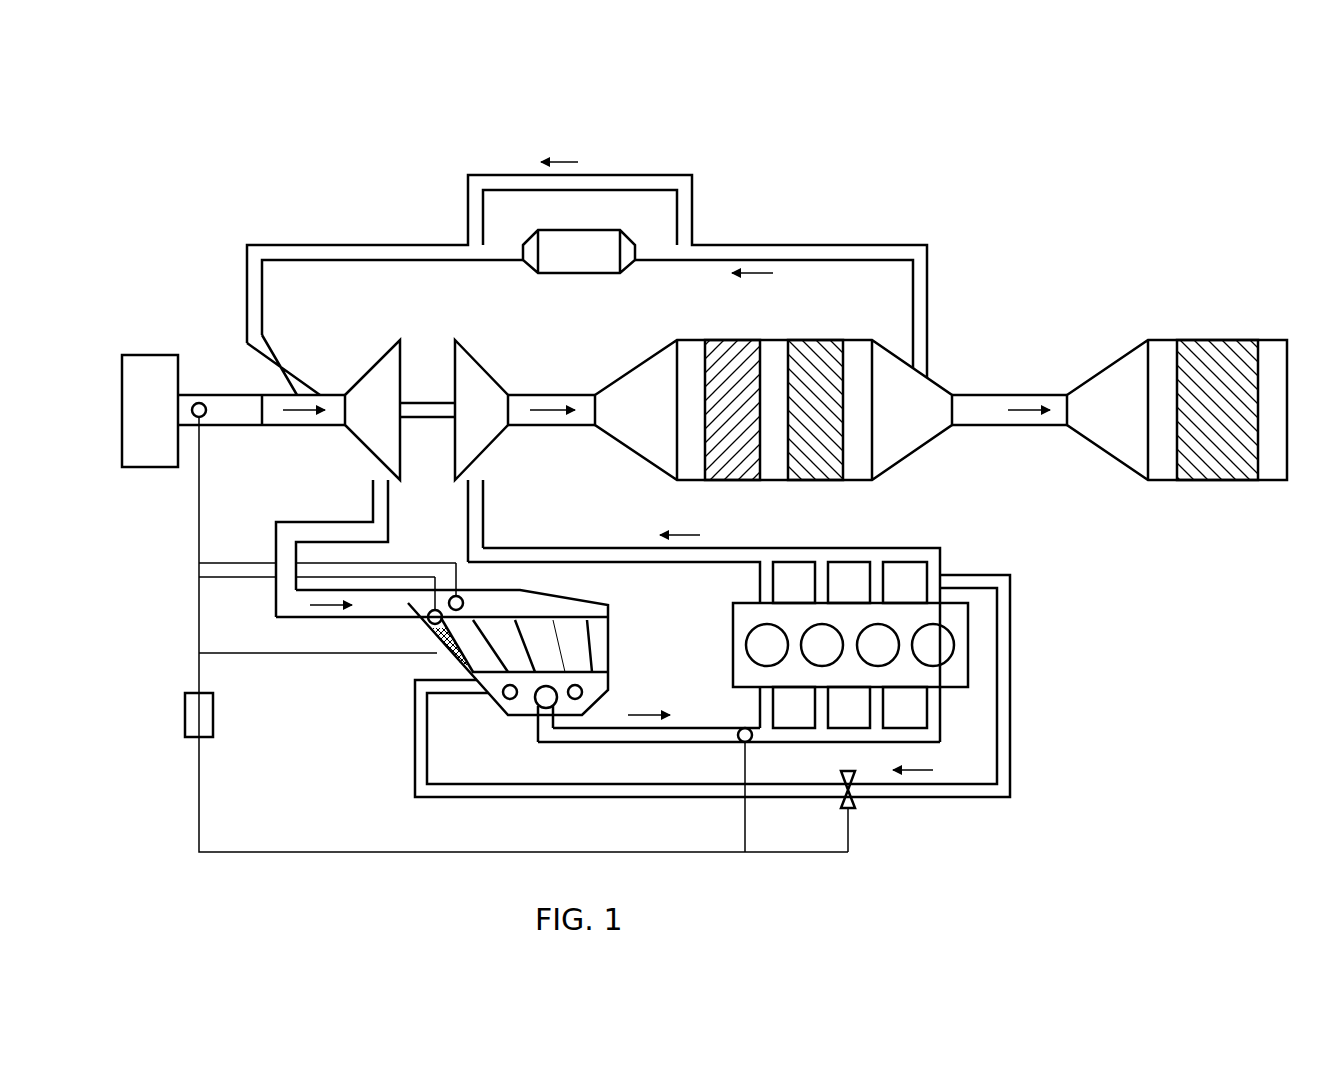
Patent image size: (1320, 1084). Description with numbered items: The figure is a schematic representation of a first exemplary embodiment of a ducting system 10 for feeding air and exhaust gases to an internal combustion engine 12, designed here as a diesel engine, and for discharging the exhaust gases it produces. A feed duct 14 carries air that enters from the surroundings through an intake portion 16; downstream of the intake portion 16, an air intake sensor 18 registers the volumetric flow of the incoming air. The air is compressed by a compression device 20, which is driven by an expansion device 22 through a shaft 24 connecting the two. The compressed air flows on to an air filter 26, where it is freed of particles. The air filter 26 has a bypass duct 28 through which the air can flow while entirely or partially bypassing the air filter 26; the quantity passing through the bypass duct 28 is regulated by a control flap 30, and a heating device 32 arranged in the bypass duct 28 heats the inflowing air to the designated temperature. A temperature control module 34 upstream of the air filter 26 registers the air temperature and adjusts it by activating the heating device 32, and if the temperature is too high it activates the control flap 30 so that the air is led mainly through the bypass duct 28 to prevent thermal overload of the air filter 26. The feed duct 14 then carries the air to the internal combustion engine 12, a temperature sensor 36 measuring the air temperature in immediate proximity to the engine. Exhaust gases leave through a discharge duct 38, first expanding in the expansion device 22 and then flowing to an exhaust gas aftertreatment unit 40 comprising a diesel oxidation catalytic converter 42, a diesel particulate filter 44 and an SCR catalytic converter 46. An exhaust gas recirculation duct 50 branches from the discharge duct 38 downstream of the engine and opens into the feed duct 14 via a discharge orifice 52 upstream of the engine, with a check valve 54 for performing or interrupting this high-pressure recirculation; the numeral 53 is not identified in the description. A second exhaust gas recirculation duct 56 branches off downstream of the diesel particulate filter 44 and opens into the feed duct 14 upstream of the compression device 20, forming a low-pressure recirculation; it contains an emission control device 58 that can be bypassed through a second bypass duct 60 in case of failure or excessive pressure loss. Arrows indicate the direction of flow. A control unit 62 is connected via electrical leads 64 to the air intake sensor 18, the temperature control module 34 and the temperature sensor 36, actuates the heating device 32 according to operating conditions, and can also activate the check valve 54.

The ducting system 10 is at (265, 200).
The internal combustion engine 12 is at (970, 640).
The feed duct 14 is at (235, 427).
The intake portion 16 is at (143, 468).
The air intake sensor 18 is at (199, 402).
The compression device 20 is at (338, 478).
The expansion device 22 is at (525, 451).
The shaft 24 is at (418, 419).
The air filter 26 is at (580, 578).
The bypass duct 28 is at (466, 673).
The control flap 30 is at (426, 614).
The heating device 32 is at (438, 655).
The temperature control module 34 is at (465, 601).
The temperature sensor 36 is at (752, 740).
The discharge duct 38 is at (1003, 393).
The exhaust gas aftertreatment unit 40 is at (814, 311).
The diesel oxidation catalytic converter 42 is at (732, 410).
The diesel particulate filter 44 is at (815, 410).
The SCR catalytic converter 46 is at (1177, 410).
The exhaust gas recirculation duct 50 is at (500, 800).
The discharge orifice 52 is at (467, 700).
The exhaust manifold passage 53 is at (690, 745).
The check valve 54 is at (856, 792).
The second exhaust gas recirculation duct 56 is at (815, 245).
The emission control device 58 is at (566, 262).
The second bypass duct 60 is at (601, 175).
The control unit 62 is at (213, 713).
The electrical leads 64 is at (330, 850).